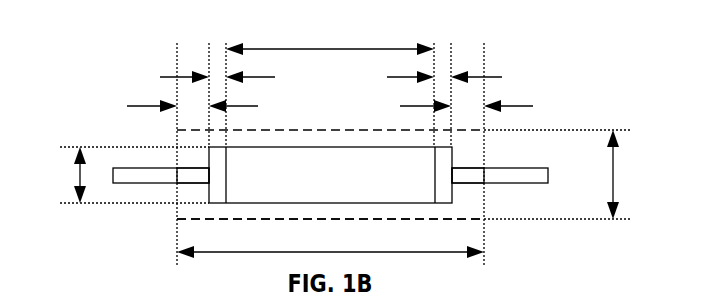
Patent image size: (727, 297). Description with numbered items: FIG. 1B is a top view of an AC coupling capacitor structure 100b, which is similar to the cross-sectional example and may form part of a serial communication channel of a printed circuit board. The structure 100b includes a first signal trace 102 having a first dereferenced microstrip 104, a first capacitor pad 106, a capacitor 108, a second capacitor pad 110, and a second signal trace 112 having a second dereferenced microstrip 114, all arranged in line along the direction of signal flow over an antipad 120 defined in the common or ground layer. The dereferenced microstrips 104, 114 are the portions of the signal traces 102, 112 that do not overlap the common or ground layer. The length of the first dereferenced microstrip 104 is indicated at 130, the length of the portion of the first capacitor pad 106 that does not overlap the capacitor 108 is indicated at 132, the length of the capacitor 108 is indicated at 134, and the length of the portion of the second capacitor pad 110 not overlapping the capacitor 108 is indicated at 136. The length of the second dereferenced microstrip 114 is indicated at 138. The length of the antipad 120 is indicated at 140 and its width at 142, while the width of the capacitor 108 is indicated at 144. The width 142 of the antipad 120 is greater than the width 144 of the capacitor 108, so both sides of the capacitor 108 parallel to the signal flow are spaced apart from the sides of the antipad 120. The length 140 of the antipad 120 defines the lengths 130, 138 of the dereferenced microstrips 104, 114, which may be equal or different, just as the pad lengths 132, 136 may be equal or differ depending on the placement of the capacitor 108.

The AC coupling capacitor structure 100b is at (555, 36).
The first signal trace 102 is at (117, 160).
The first dereferenced microstrip 104 is at (192, 173).
The first capacitor pad 106 is at (218, 187).
The capacitor 108 is at (315, 155).
The second capacitor pad 110 is at (445, 187).
The second signal trace 112 is at (551, 157).
The second dereferenced microstrip 114 is at (472, 175).
The antipad 120 is at (332, 220).
The length of first dereferenced microstrip 130 is at (138, 106).
The length of first capacitor pad portion 132 is at (172, 77).
The length of capacitor 134 is at (328, 49).
The length of second capacitor pad portion 136 is at (492, 77).
The length of second dereferenced microstrip 138 is at (523, 106).
The length of antipad 140 is at (400, 253).
The width of antipad 142 is at (615, 179).
The width of capacitor 144 is at (78, 181).